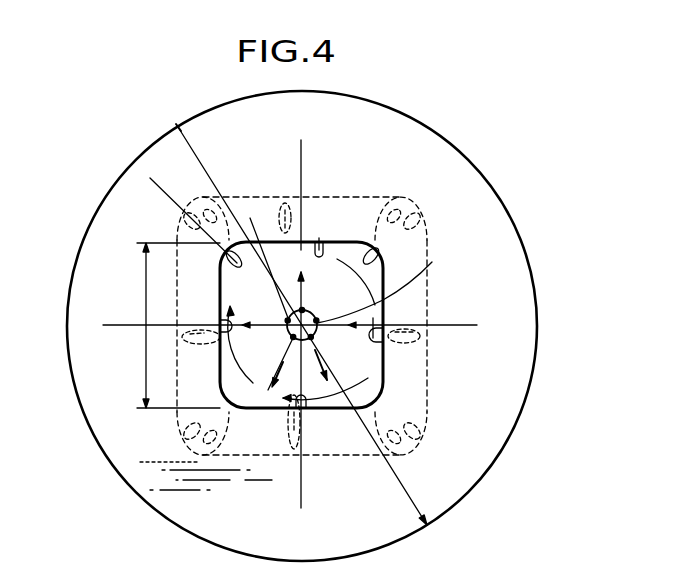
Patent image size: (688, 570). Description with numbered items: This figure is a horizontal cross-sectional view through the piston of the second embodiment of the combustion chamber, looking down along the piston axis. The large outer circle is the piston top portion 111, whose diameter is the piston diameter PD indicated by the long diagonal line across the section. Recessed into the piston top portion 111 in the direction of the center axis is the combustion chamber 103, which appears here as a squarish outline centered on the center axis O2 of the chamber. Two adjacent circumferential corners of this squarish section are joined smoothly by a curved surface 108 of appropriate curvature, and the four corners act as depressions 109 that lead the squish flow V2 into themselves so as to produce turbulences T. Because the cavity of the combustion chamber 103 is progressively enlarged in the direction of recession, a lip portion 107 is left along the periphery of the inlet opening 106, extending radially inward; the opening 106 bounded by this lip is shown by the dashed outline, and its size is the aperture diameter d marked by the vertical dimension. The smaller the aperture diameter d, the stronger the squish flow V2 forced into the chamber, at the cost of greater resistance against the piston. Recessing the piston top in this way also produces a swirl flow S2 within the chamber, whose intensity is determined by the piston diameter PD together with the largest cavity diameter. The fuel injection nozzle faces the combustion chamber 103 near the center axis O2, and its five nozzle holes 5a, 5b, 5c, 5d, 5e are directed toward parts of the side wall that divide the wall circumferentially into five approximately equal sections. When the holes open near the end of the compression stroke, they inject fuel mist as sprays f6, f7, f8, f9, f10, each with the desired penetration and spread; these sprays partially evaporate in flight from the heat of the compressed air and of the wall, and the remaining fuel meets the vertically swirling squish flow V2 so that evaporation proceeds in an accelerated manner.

The piston top portion 111 is at (508, 271).
The combustion chamber 103 is at (274, 358).
The opening 106 is at (318, 240).
The lip portion 107 is at (352, 215).
The curved surface 108 is at (401, 208).
The depressions 109 is at (412, 247).
The turbulences T is at (423, 233).
The center axis O2 is at (306, 315).
The nozzle hole 5a is at (267, 268).
The nozzle hole 5b is at (291, 364).
The nozzle hole 5c is at (310, 341).
The nozzle hole 5d is at (374, 322).
The nozzle hole 5e is at (303, 306).
The spray f6 is at (265, 318).
The spray f7 is at (284, 394).
The spray f8 is at (337, 367).
The spray f9 is at (324, 328).
The spray f10 is at (251, 213).
The swirl flow S2 is at (390, 286).
The piston diameter PD is at (215, 186).
The squish flow V2 is at (163, 191).
The aperture diameter d is at (147, 348).